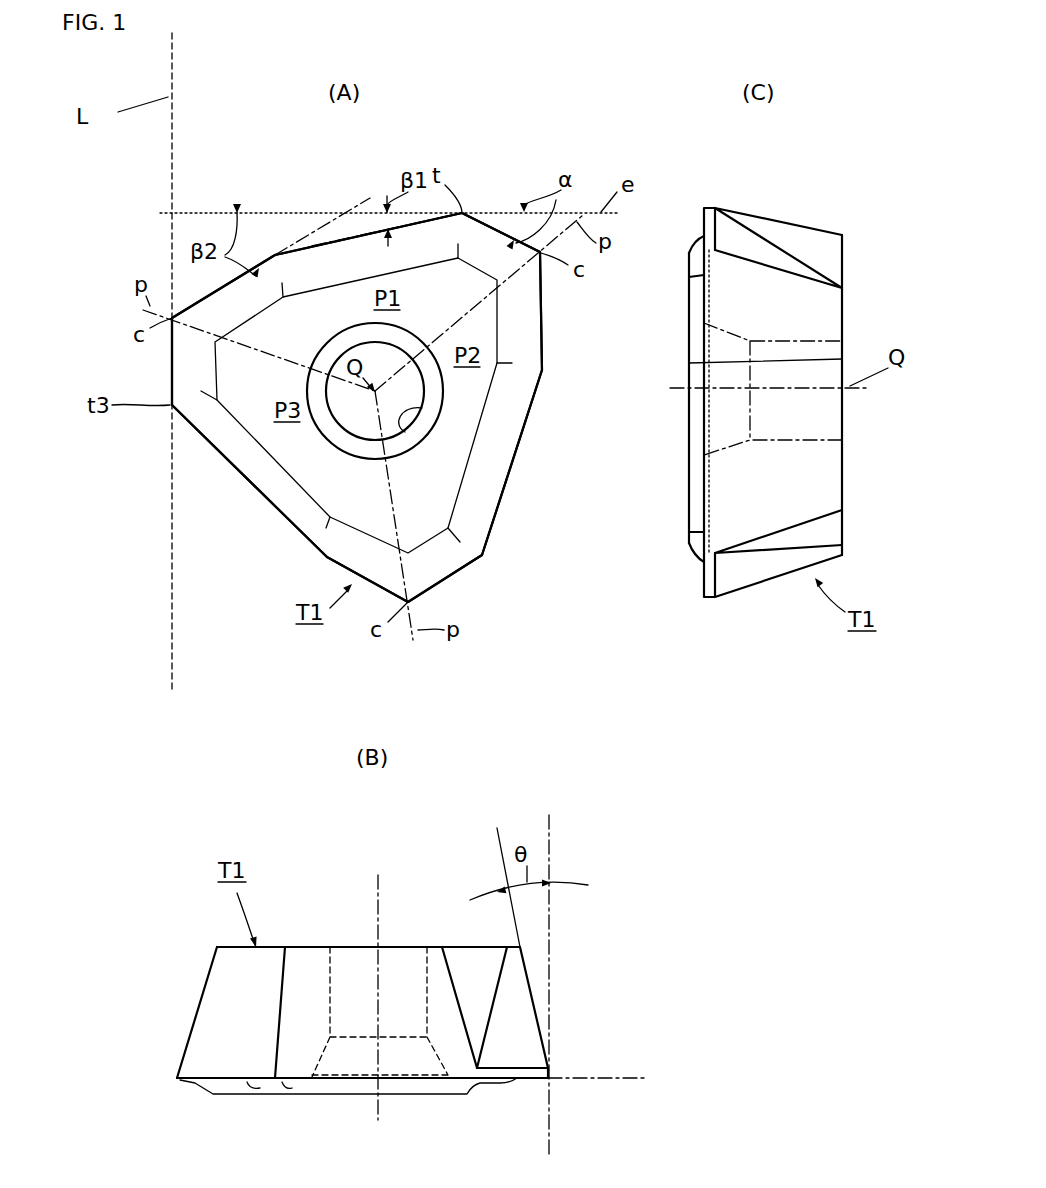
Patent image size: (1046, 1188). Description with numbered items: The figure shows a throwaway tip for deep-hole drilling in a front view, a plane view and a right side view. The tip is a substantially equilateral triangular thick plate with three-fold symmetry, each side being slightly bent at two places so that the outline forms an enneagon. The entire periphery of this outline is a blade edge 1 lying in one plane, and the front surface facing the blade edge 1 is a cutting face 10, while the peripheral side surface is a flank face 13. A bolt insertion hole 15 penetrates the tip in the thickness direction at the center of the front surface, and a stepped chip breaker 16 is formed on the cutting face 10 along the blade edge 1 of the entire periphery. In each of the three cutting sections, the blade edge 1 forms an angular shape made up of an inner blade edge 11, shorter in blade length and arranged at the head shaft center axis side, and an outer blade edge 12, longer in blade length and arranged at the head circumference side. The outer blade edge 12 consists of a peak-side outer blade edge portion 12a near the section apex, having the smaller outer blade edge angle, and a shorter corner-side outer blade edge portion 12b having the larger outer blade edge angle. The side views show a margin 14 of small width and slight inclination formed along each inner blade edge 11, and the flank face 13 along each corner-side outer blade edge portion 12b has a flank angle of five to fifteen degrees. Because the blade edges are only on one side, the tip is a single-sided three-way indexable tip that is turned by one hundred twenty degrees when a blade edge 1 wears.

The blade edge 1 is at (170, 423).
The cutting face 10 is at (480, 500).
The inner blade edge 11 is at (487, 225).
The outer blade edge 12 is at (273, 152).
The peak-side outer blade edge portion 12a is at (323, 240).
The corner-side outer blade edge portion 12b is at (198, 297).
The flank face 13 is at (812, 315).
The margin 14 is at (730, 218).
The bolt insertion hole 15 is at (422, 408).
The stepped chip breaker 16 is at (230, 410).